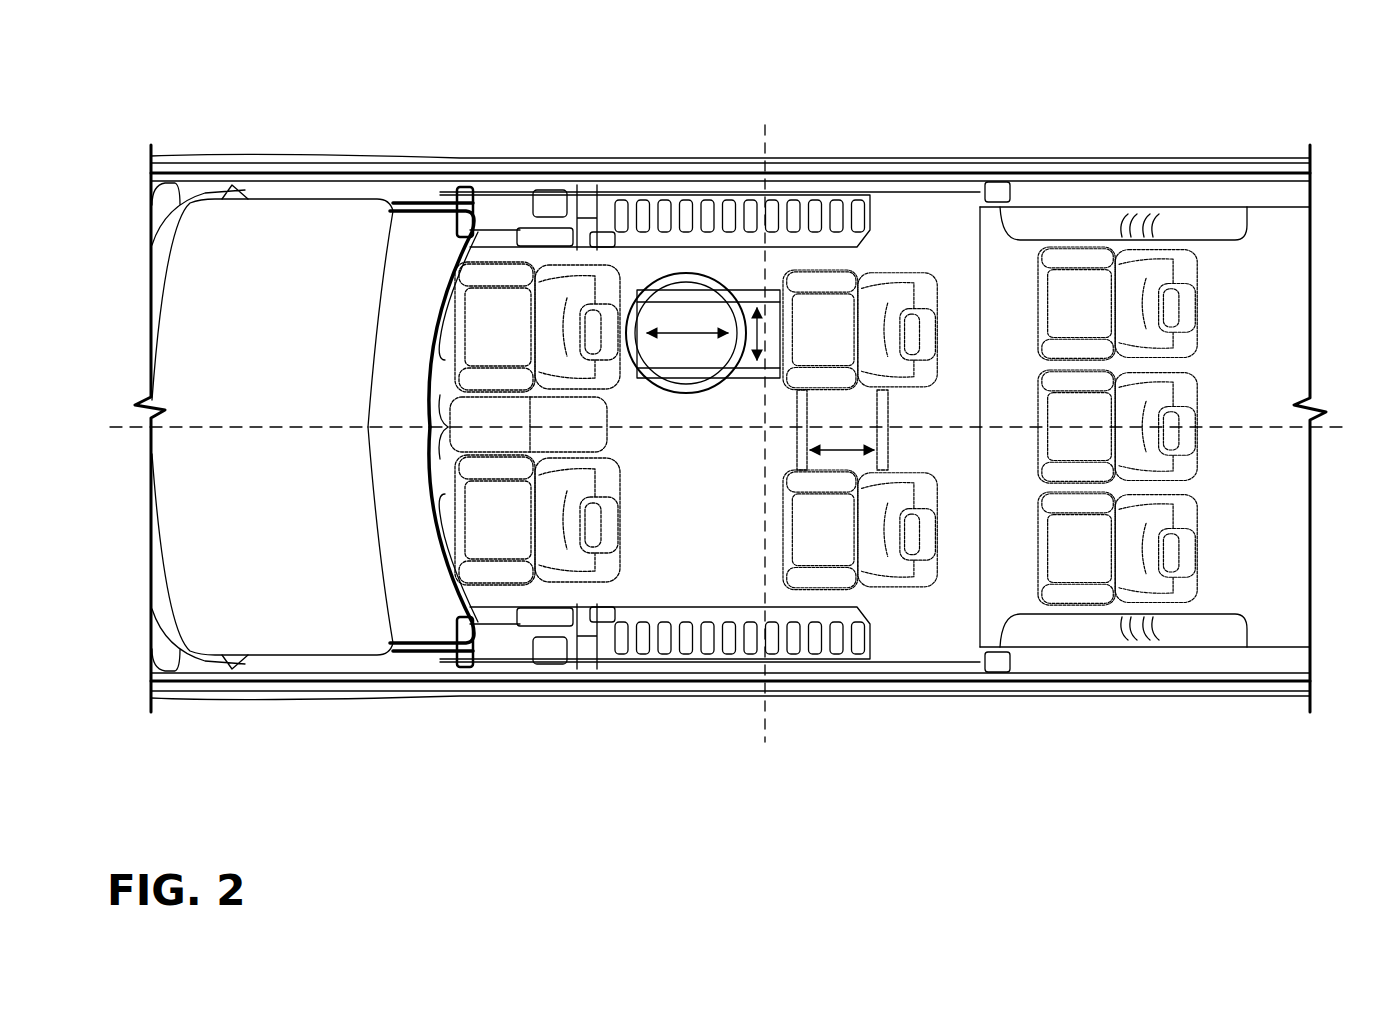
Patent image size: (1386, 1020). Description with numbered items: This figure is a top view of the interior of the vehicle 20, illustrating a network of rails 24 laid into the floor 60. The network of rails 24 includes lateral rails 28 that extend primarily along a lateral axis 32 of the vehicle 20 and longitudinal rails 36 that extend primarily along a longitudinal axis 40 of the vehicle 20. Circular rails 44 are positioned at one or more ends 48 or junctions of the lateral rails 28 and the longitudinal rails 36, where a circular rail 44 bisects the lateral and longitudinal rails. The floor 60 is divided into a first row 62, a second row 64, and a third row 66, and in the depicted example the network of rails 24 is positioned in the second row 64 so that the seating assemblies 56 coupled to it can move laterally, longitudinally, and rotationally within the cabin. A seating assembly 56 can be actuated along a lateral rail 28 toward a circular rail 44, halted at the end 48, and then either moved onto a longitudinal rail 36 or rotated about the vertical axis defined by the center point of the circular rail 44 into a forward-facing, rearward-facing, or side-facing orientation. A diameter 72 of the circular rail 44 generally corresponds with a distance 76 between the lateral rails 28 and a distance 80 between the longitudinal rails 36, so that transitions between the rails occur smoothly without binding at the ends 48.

The vehicle 20 is at (352, 137).
The network of rails 24 is at (783, 437).
The lateral rails 28 is at (885, 457).
The lateral axis 32 is at (765, 138).
The longitudinal rails 36 is at (640, 372).
The longitudinal axis 40 is at (1325, 427).
The circular rails 44 is at (685, 265).
The ends 48 is at (662, 270).
The seating assemblies 56 is at (905, 270).
The floor 60 is at (717, 574).
The first row 62 is at (497, 285).
The second row 64 is at (835, 452).
The third row 66 is at (1130, 583).
The diameter 72 is at (683, 330).
The distance 76 is at (823, 567).
The distance 80 is at (712, 262).